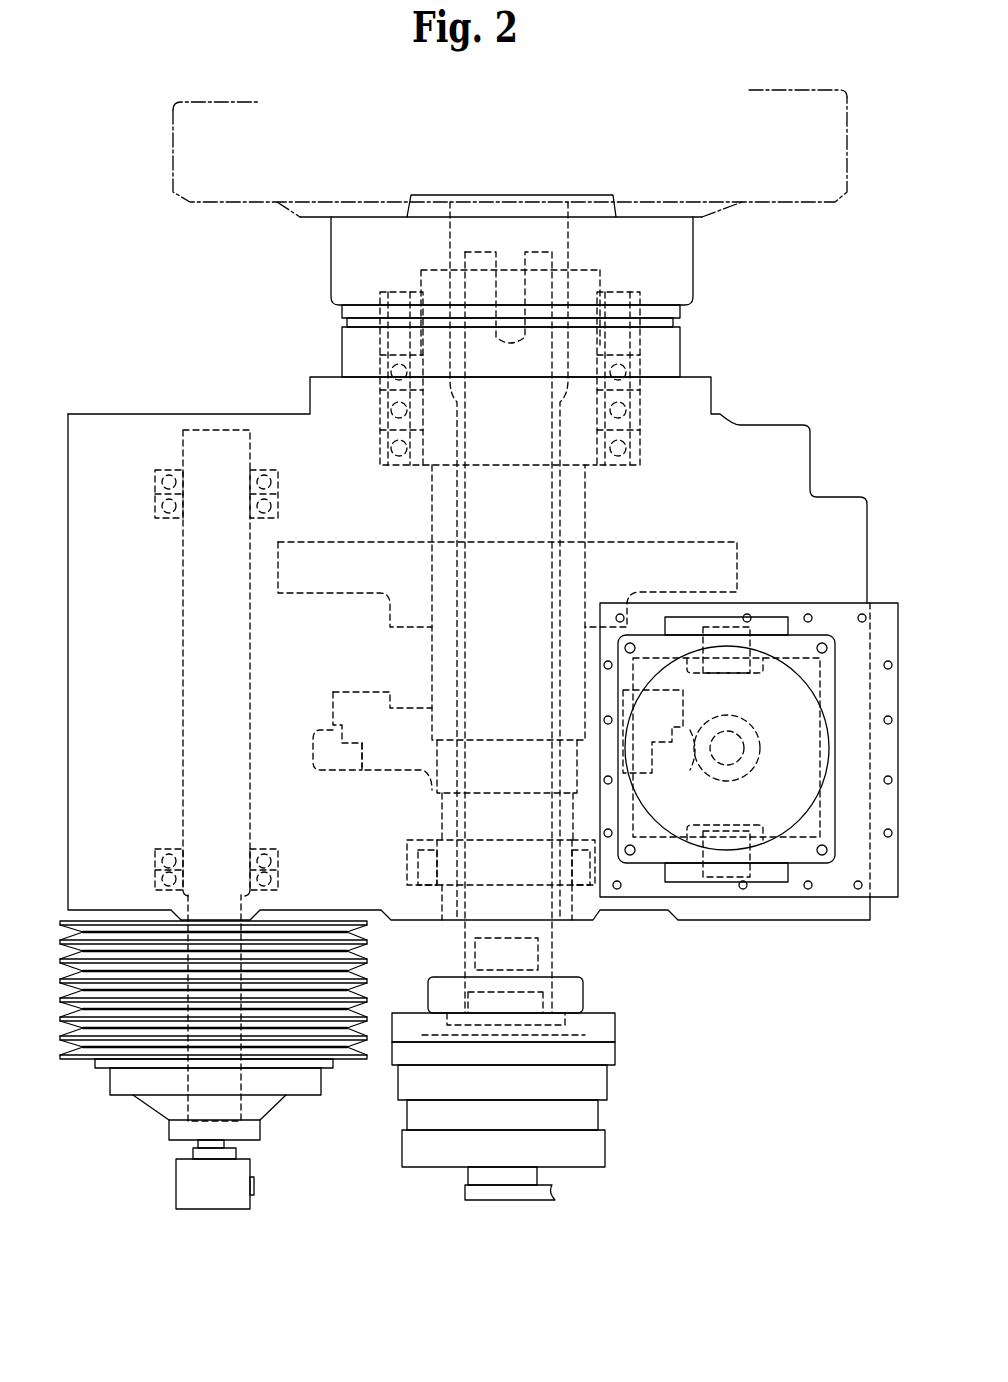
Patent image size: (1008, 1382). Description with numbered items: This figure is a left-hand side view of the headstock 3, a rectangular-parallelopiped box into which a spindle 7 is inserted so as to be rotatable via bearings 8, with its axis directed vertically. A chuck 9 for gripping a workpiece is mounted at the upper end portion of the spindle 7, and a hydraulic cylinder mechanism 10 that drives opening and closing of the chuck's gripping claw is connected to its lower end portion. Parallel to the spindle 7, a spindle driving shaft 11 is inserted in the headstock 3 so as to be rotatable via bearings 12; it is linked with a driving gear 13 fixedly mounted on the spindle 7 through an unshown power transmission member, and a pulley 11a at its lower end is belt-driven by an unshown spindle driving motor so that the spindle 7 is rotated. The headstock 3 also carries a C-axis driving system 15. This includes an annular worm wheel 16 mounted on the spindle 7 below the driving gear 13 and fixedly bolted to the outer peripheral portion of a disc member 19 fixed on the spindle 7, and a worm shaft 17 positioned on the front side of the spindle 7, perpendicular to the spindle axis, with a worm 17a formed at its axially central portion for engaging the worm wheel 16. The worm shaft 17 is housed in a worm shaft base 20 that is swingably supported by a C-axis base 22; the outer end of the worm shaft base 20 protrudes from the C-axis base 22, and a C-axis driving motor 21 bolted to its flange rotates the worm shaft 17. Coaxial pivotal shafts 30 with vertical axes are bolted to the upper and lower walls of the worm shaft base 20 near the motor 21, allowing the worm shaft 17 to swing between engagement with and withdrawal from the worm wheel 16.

The headstock 3 is at (130, 406).
The spindle 7 is at (596, 507).
The bearings 8 is at (640, 336).
The chuck 9 is at (781, 205).
The hydraulic cylinder mechanism 10 is at (610, 1082).
The spindle driving shaft 11 is at (178, 684).
The pulley 11a is at (110, 1078).
The bearings 12 is at (157, 474).
The driving gear 13 is at (715, 540).
The C-axis driving system 15 is at (824, 527).
The worm wheel 16 is at (672, 777).
The worm shaft 17 is at (757, 734).
The worm 17a is at (753, 767).
The disc member 19 is at (367, 690).
The worm shaft base 20 is at (823, 817).
The C-axis driving motor 21 is at (653, 822).
The C-axis base 22 is at (806, 601).
The pivotal shafts 30 is at (727, 627).